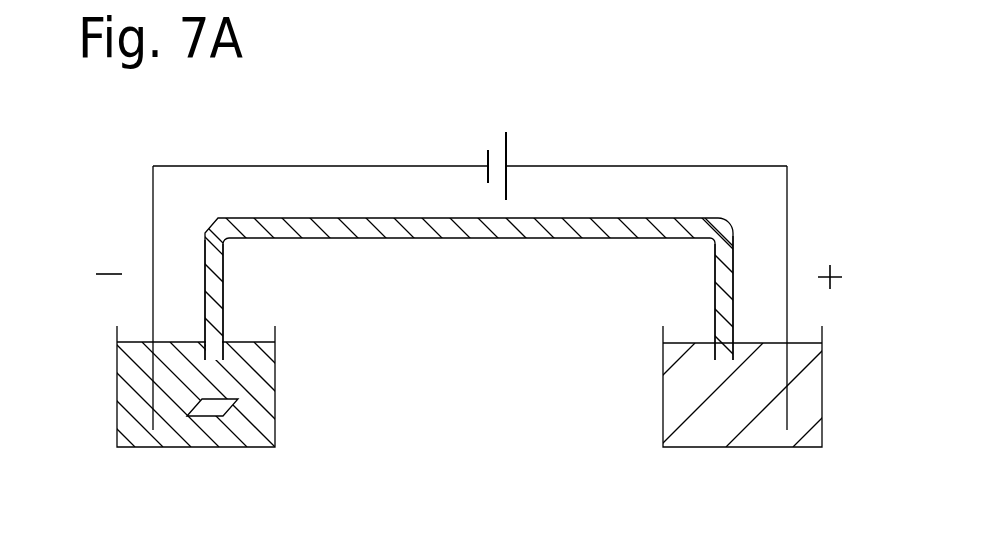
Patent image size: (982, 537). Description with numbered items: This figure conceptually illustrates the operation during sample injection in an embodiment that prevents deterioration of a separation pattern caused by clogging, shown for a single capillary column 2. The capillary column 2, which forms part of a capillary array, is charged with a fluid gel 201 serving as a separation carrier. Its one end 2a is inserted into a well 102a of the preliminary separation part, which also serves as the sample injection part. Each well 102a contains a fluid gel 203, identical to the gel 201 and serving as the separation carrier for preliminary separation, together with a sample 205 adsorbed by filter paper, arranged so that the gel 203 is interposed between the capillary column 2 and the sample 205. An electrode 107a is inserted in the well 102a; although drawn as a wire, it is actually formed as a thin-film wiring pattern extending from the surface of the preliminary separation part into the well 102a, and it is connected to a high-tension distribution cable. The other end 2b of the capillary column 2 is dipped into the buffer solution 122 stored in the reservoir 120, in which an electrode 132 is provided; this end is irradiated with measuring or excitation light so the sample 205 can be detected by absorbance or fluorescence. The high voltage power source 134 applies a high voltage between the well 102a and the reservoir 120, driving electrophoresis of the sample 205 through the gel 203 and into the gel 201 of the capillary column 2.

The capillary column 2 is at (476, 299).
The one end of the capillary column 2a is at (224, 293).
The other end of the capillary column 2b is at (714, 293).
The fluid gel 201 is at (437, 232).
The high voltage power source 134 is at (496, 141).
The electrode 107a is at (151, 394).
The electrode 132 is at (786, 392).
The well 102a is at (213, 398).
The fluid gel 203 is at (258, 432).
The sample 205 is at (232, 400).
The reservoir 120 is at (729, 386).
The buffer solution 122 is at (670, 418).